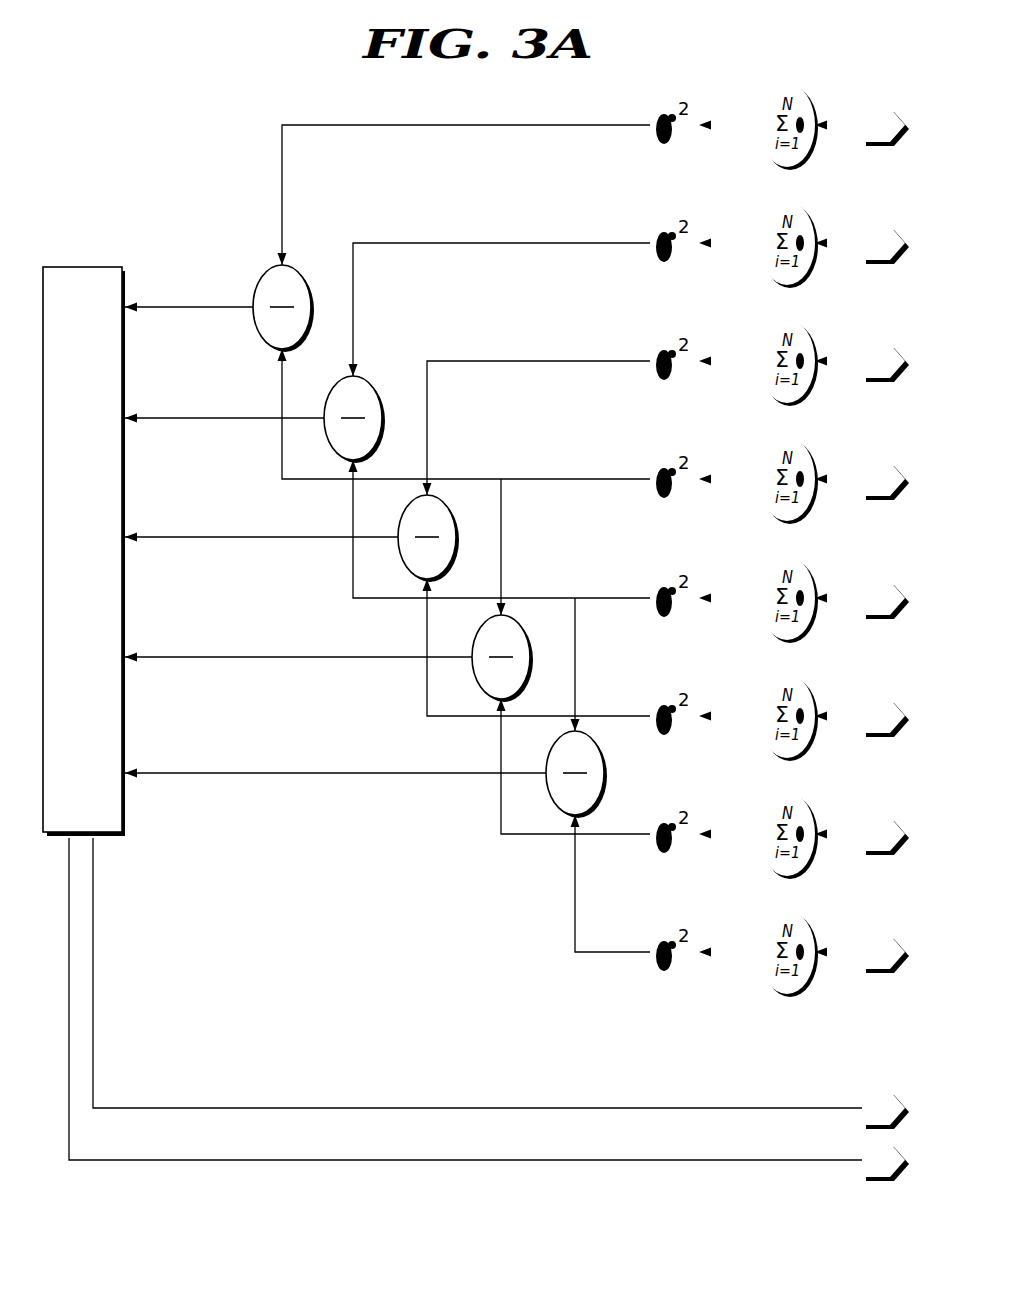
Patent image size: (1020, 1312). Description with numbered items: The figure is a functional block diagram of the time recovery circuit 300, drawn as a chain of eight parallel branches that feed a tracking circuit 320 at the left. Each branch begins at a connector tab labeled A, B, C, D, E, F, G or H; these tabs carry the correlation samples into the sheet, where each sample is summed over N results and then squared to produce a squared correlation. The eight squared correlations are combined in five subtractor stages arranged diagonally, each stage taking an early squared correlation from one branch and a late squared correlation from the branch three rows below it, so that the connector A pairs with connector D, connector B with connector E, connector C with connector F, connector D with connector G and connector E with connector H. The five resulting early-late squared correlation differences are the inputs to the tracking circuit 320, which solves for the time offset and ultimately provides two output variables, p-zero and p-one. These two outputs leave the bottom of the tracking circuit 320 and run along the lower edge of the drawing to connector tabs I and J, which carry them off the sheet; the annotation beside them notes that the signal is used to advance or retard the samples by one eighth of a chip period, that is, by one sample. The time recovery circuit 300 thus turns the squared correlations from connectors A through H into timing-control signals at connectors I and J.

The time recovery circuit 300 is at (265, 57).
The tracking circuit 320 is at (65, 267).
The input A is at (885, 127).
The input B is at (885, 245).
The input C is at (885, 363).
The input D is at (885, 481).
The input E is at (885, 600).
The input F is at (885, 718).
The input G is at (885, 836).
The input H is at (885, 954).
The output I is at (885, 1110).
The output J is at (885, 1162).